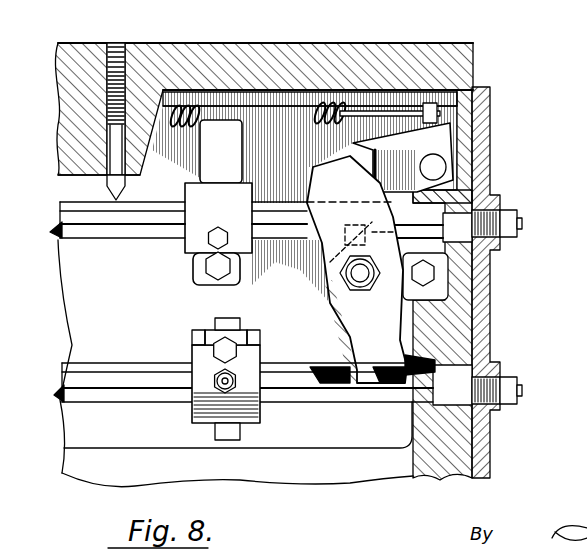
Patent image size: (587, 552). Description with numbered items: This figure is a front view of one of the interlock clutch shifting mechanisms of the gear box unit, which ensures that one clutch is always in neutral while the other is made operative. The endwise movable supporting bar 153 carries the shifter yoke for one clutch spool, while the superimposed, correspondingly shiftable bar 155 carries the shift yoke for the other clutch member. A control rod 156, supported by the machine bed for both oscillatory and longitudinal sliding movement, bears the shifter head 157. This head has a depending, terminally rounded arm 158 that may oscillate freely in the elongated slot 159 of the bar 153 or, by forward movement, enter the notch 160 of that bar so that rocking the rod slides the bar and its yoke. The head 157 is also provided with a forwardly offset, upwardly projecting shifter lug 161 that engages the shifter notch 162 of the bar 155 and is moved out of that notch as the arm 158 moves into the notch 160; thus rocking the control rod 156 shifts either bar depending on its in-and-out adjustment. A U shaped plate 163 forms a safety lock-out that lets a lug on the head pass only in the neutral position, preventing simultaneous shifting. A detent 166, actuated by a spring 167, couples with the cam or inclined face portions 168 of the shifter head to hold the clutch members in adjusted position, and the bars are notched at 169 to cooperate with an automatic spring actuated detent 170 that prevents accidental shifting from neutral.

The supporting bar 153 is at (102, 383).
The shiftable bar 155 is at (60, 212).
The control rod 156 is at (395, 266).
The shifter head 157 is at (417, 192).
The depending arm 158 is at (410, 368).
The elongated slot 159 is at (450, 418).
The notch 160 is at (357, 380).
The shifter lug 161 is at (518, 240).
The shifter notch 162 is at (468, 163).
The U shaped plate 163 is at (445, 305).
The detent 166 is at (393, 135).
The spring 167 is at (345, 110).
The cam or inclined face portions 168 is at (312, 110).
The notch 169 is at (112, 198).
The spring actuated detent 170 is at (112, 143).